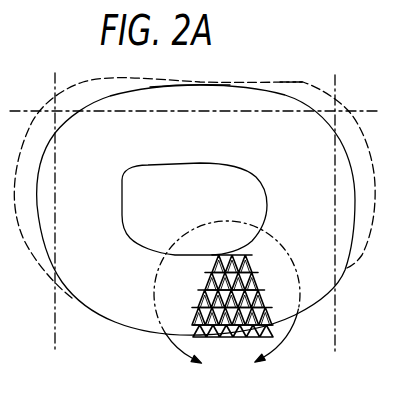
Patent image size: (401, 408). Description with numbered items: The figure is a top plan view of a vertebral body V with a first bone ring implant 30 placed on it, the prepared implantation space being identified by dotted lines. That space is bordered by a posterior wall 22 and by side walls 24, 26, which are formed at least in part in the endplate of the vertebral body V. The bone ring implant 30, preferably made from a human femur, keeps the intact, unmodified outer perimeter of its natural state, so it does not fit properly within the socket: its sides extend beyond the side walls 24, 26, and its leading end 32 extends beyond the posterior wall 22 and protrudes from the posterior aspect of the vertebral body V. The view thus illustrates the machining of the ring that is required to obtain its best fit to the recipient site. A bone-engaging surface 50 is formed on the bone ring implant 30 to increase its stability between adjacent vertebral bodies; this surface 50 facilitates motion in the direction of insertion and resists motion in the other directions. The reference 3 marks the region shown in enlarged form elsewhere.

The posterior wall 22 is at (142, 112).
The leading end 32 is at (197, 83).
The first bone ring implant 30 is at (118, 291).
The side wall 24 is at (55, 315).
The side wall 26 is at (335, 315).
The bone-engaging surface 50 is at (156, 306).
The section view direction 3 is at (232, 349).
The vertebral body V is at (303, 83).